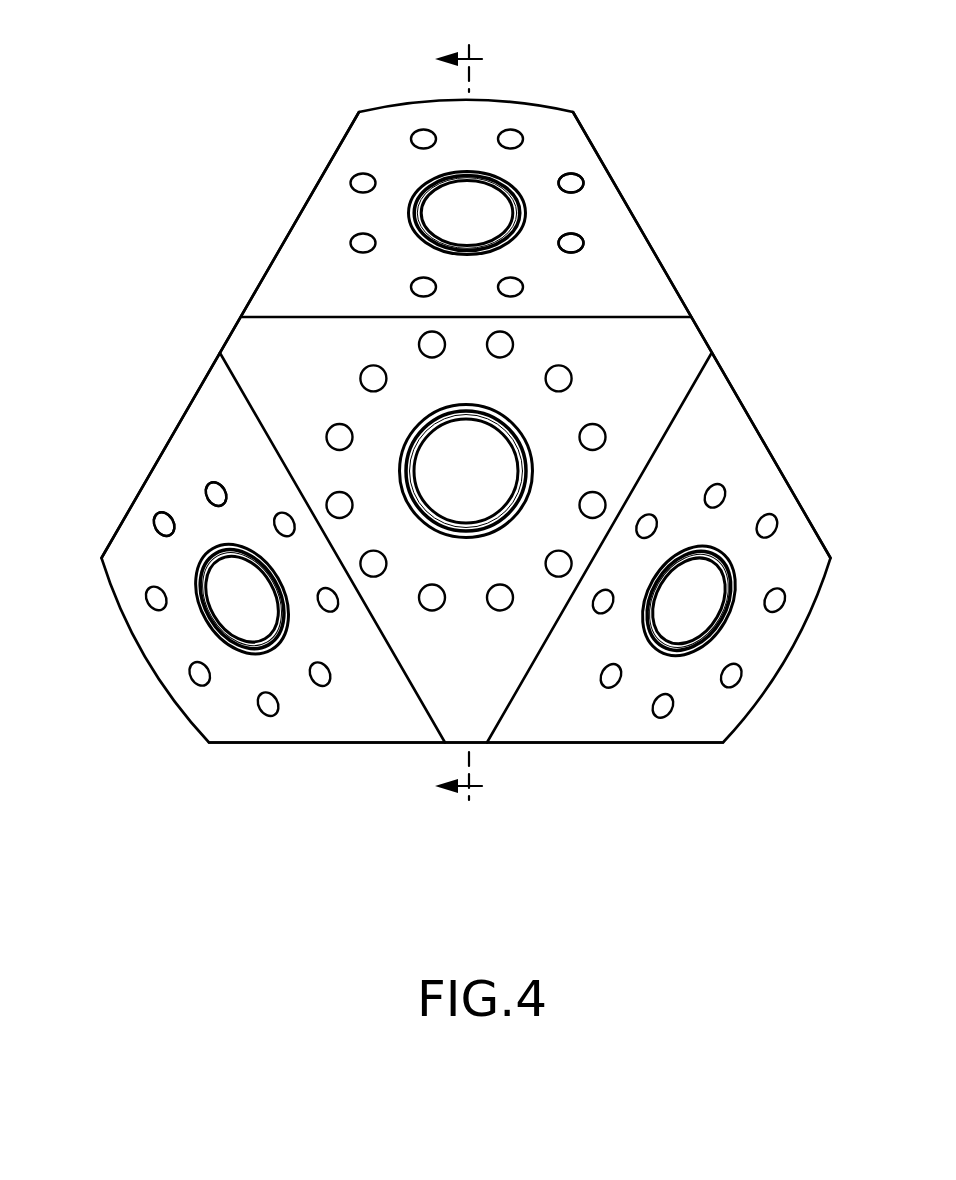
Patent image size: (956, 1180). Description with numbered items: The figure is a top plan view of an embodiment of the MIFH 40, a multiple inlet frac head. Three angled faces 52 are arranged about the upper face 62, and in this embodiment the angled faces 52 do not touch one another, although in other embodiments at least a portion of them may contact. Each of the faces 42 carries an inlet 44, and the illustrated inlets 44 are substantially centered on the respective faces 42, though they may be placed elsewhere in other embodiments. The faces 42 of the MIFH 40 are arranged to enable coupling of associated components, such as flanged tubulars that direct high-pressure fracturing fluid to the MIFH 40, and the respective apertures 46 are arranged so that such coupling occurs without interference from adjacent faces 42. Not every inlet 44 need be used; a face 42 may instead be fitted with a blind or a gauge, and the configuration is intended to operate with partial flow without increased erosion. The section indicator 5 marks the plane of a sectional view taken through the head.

The MIFH 40 is at (760, 73).
The faces 42 is at (295, 170).
The inlets 44 is at (455, 225).
The apertures 46 is at (572, 243).
The angled faces 52 is at (633, 158).
The upper face 62 is at (710, 323).
The section line 5- 5 is at (446, 422).